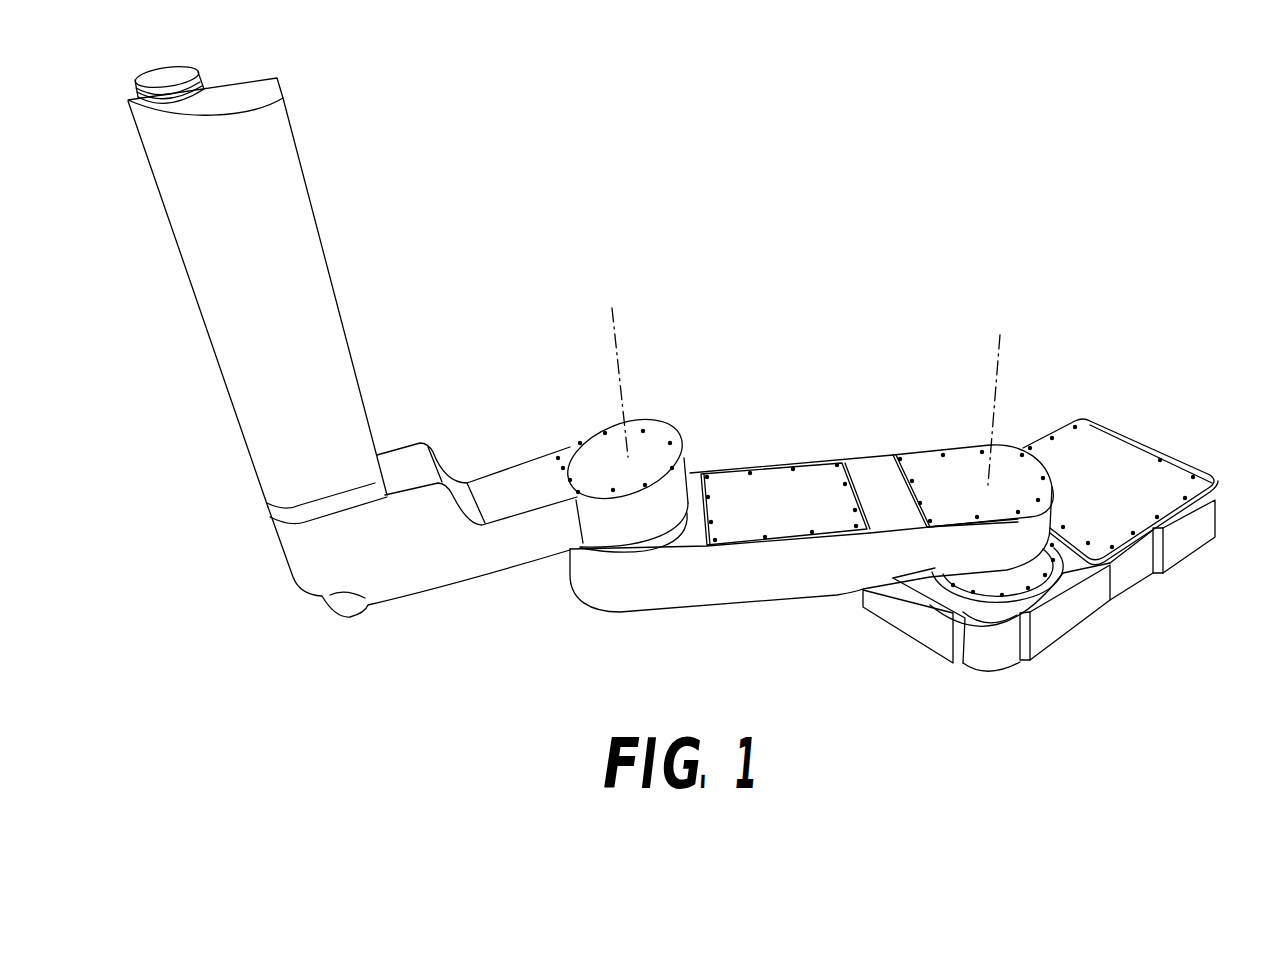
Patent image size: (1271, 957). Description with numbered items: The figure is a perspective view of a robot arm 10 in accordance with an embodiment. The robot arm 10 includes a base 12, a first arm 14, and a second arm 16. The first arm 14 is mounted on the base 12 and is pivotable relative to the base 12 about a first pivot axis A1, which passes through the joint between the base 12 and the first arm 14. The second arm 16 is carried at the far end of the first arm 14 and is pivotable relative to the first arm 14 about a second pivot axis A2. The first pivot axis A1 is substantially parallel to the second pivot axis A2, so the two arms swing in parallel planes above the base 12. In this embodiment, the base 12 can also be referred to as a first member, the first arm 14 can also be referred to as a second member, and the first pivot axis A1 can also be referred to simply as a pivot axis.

The robot arm 10 is at (774, 306).
The base 12 is at (1127, 420).
The first arm 14 is at (867, 447).
The second arm 16 is at (503, 458).
The first pivot axis A1 is at (1000, 352).
The second pivot axis A2 is at (613, 325).